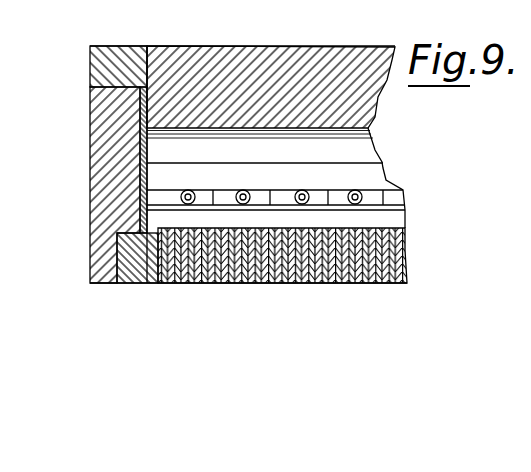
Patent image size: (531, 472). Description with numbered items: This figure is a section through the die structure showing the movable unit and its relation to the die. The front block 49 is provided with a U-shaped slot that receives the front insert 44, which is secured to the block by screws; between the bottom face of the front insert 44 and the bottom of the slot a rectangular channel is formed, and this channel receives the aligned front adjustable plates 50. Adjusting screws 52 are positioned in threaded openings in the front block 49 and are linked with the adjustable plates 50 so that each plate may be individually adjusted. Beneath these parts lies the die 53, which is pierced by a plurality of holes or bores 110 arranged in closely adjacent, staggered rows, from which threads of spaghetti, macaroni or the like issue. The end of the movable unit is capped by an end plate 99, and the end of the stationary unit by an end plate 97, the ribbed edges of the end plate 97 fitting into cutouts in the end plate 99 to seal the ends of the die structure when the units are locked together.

The end plate 99 is at (115, 46).
The front block 49 is at (258, 39).
The end plate 97 is at (90, 143).
The front insert block 44 is at (163, 177).
The front adjustable plate 50 is at (157, 197).
The adjusting screw 52 is at (357, 190).
The die 53 is at (140, 283).
The bore 110 is at (240, 283).